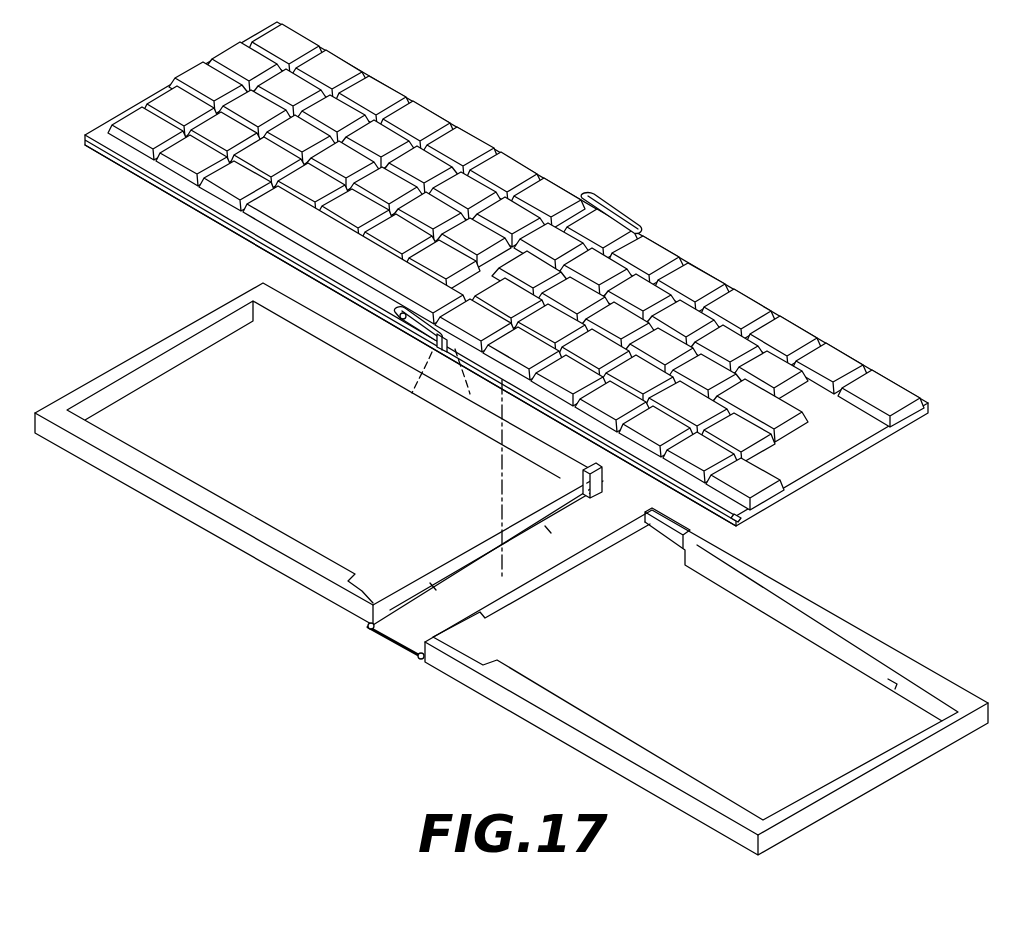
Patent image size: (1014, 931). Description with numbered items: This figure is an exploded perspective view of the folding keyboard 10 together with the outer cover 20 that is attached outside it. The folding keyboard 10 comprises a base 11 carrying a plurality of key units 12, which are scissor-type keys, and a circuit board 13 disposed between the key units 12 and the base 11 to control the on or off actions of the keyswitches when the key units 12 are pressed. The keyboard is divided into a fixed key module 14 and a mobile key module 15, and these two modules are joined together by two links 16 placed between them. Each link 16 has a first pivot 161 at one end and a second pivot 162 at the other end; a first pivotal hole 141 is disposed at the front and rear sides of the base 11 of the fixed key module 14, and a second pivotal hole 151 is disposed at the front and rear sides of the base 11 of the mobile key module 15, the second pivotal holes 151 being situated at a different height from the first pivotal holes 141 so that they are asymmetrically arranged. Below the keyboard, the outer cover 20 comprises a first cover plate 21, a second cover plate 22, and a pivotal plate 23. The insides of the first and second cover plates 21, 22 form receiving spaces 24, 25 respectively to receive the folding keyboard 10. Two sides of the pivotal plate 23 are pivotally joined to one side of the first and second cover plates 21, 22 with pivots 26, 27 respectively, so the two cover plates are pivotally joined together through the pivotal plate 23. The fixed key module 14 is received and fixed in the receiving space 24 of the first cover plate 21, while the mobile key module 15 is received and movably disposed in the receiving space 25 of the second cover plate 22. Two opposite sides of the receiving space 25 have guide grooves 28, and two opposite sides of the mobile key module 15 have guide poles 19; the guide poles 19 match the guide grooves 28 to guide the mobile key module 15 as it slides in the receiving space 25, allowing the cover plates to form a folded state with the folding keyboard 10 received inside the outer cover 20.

The folding keyboard 10 is at (496, 293).
The base 11 is at (205, 216).
The key units 12 is at (470, 148).
The circuit board 13 is at (160, 179).
The fixed key module 14 is at (496, 267).
The mobile key module 15 is at (604, 452).
The link 16 is at (625, 207).
The guide poles 19 is at (740, 521).
The outer cover 20 is at (511, 569).
The first cover plate 21 is at (321, 454).
The second cover plate 22 is at (706, 681).
The pivotal plate 23 is at (398, 640).
The receiving space 24 is at (130, 405).
The receiving space 25 is at (825, 670).
The pivot 26 is at (368, 624).
The pivot 27 is at (436, 694).
The guide grooves 28 is at (930, 700).
The first pivotal hole 141 is at (400, 316).
The second pivotal hole 151 is at (462, 400).
The first pivot 161 is at (432, 332).
The second pivot 162 is at (440, 346).